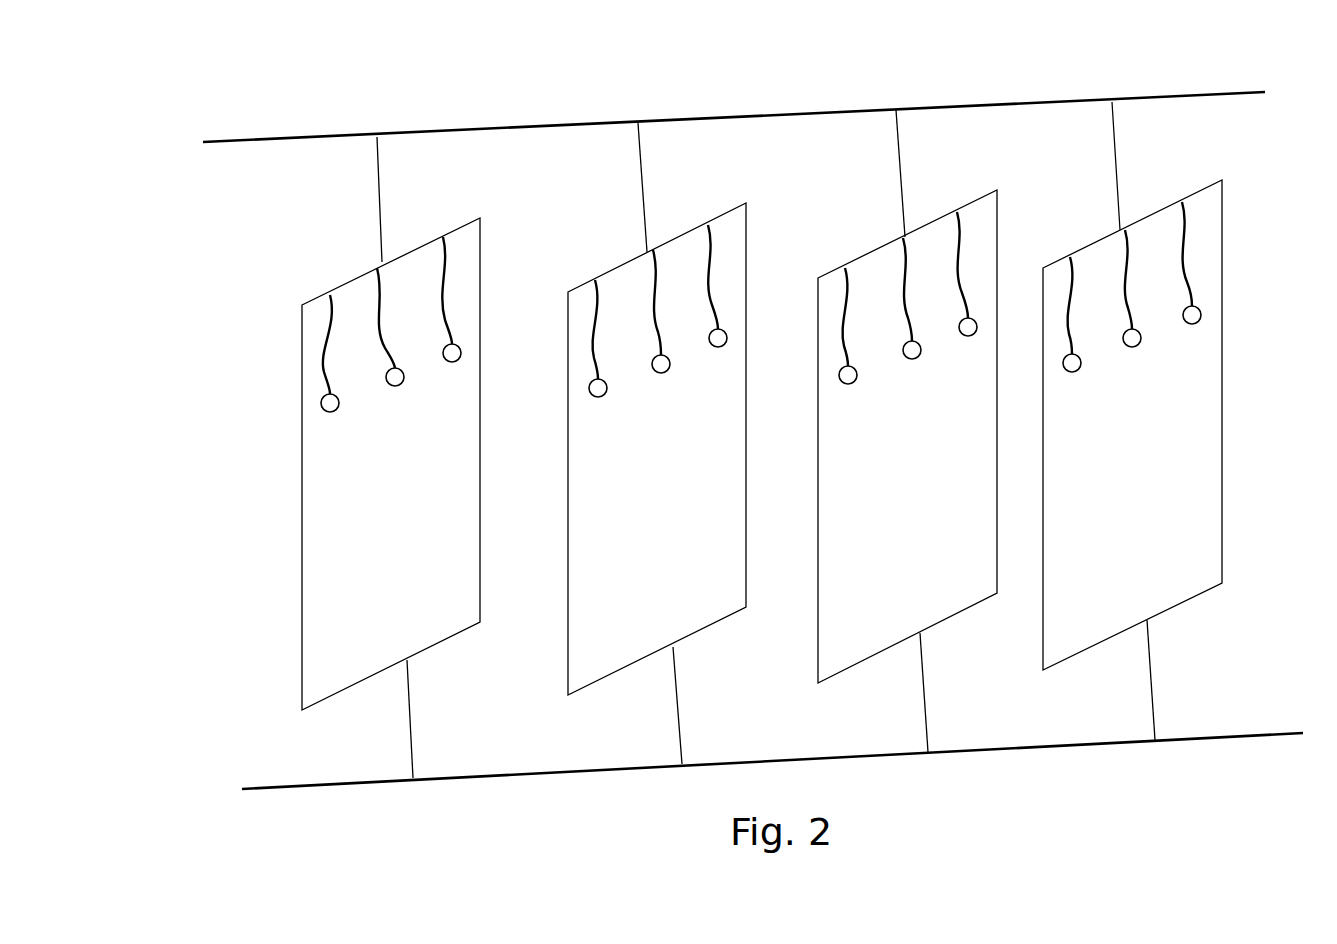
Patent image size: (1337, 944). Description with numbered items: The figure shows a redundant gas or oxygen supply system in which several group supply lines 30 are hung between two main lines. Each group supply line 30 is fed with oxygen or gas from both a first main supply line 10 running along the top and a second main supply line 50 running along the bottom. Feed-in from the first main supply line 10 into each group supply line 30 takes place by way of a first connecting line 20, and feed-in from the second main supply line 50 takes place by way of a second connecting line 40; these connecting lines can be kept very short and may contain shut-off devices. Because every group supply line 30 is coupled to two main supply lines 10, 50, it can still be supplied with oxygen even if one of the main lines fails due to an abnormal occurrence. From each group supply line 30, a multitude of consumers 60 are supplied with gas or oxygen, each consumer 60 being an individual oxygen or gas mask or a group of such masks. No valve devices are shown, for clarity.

The first main supply line 10 is at (688, 118).
The first connecting line 20 is at (380, 176).
The group supply line 30 is at (302, 648).
The second connecting line 40 is at (408, 740).
The second main supply line 50 is at (545, 778).
The consumers 60 is at (323, 410).